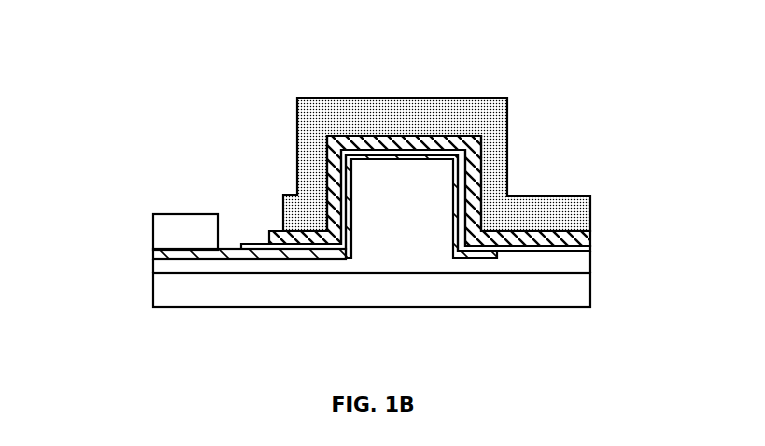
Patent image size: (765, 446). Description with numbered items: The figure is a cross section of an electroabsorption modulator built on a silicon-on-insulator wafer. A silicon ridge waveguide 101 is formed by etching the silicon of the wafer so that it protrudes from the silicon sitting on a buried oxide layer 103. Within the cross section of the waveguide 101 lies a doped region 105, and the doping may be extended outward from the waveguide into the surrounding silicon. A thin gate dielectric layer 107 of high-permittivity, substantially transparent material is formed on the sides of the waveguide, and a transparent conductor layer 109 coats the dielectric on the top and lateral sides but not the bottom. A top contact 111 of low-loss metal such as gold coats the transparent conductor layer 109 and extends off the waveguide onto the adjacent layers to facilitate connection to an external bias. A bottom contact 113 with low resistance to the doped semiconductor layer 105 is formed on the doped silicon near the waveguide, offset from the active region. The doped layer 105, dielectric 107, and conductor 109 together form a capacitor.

The silicon ridge waveguide 101 is at (442, 258).
The buried oxide layer 103 is at (312, 290).
The doped region 105 is at (342, 158).
The gate dielectric layer 107 is at (343, 200).
The transparent conductor layer 109 is at (270, 238).
The top contact 111 is at (495, 110).
The bottom contact 113 is at (168, 237).